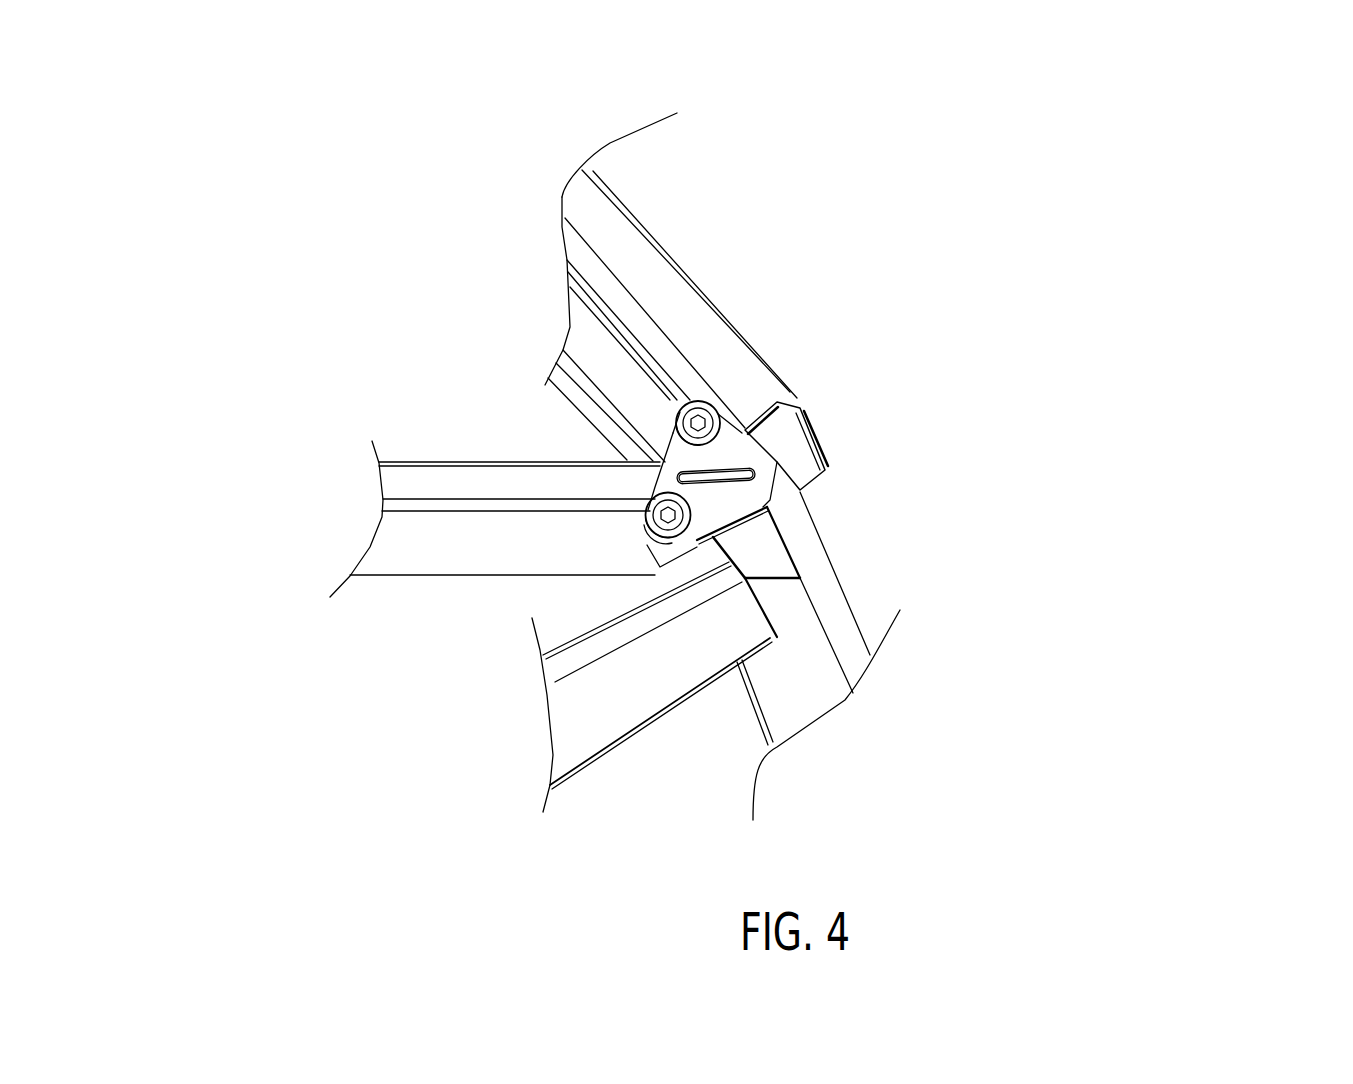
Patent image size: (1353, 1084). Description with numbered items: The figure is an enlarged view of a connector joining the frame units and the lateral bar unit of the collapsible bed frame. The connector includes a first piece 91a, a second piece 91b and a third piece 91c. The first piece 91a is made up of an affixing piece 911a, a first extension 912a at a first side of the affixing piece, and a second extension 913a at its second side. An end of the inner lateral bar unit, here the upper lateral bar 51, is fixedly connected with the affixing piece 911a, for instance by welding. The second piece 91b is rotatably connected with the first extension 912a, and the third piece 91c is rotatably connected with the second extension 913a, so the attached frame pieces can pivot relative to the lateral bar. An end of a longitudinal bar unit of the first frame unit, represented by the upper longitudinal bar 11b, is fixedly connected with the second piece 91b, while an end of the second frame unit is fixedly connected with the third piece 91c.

The upper longitudinal bar 11b is at (607, 240).
The upper lateral bar 51 is at (388, 543).
The first piece 91a is at (975, 435).
The affixing piece 911a is at (827, 457).
The first extension 912a is at (793, 400).
The second extension 913a is at (697, 516).
The second piece 91b is at (735, 440).
The third piece 91c is at (660, 556).